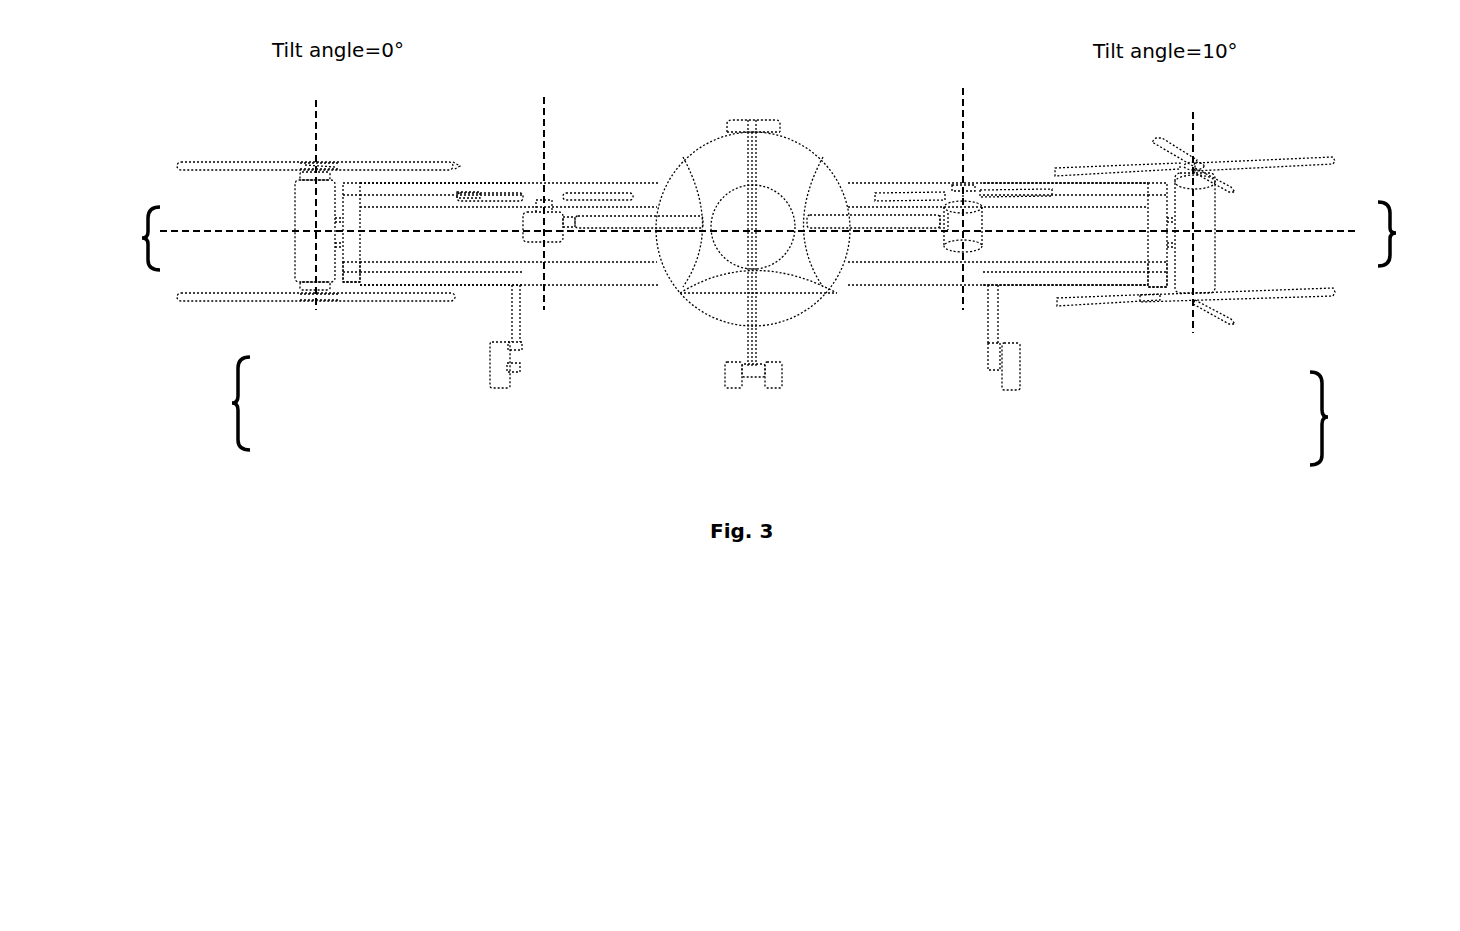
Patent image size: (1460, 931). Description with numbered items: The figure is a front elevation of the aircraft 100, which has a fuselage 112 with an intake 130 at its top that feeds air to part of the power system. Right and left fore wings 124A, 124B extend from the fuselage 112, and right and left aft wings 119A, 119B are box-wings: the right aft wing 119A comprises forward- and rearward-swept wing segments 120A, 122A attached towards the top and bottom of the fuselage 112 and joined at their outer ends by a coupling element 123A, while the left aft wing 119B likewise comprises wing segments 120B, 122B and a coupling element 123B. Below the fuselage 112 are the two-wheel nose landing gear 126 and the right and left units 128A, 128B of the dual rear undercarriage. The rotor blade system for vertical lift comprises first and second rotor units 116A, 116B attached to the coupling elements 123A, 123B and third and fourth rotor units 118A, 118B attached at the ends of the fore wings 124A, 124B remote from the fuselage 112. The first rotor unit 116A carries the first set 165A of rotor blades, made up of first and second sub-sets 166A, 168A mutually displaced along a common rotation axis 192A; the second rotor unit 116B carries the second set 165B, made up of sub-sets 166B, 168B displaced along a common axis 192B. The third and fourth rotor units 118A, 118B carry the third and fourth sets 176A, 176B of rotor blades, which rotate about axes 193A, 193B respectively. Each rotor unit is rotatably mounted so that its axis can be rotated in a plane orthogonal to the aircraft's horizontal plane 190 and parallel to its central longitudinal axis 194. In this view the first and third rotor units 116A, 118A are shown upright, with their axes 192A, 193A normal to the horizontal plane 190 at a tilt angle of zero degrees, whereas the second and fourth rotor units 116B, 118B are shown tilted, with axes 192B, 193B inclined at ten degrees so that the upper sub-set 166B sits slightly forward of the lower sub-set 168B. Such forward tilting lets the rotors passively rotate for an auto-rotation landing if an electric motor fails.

The aircraft 100 is at (672, 503).
The fuselage 112 is at (718, 316).
The first rotor unit 116A is at (276, 139).
The second rotor unit 116B is at (1233, 146).
The third rotor unit 118A is at (563, 173).
The fourth rotor unit 118B is at (955, 167).
The right aft wing 119A is at (235, 403).
The left aft wing 119B is at (1333, 417).
The forward-swept wing segment 120A is at (430, 195).
The forward-swept wing segment 120B is at (1062, 198).
The rearward-swept wing segment 122A is at (495, 268).
The rearward-swept wing segment 122B is at (1037, 272).
The coupling element 123A is at (353, 250).
The coupling element 123B is at (1157, 255).
The right fore wing 124A is at (643, 220).
The left fore wing 124B is at (863, 222).
The two-wheel nose landing gear 126 is at (753, 375).
The right unit of dual rear undercarriage 128A is at (503, 373).
The left unit of dual rear undercarriage 128B is at (1010, 375).
The intake 130 is at (755, 118).
The first set of rotor blades 165A is at (143, 238).
The second set of rotor blades 165B is at (1397, 232).
The first sub-set of rotor blades 166A is at (233, 167).
The first sub-set of rotor blades 166B is at (1282, 160).
The second sub-set of rotor blades 168A is at (218, 297).
The second sub-set of rotor blades 168B is at (1282, 296).
The third set of rotor blades 176A is at (502, 195).
The fourth set of rotor blades 176B is at (1080, 172).
The horizontal plane 190 is at (782, 228).
The common rotation axis 192A is at (316, 127).
The common axis 192B is at (1195, 127).
The axis 193A is at (544, 127).
The axis 193B is at (966, 117).
The central longitudinal axis 194 is at (752, 228).